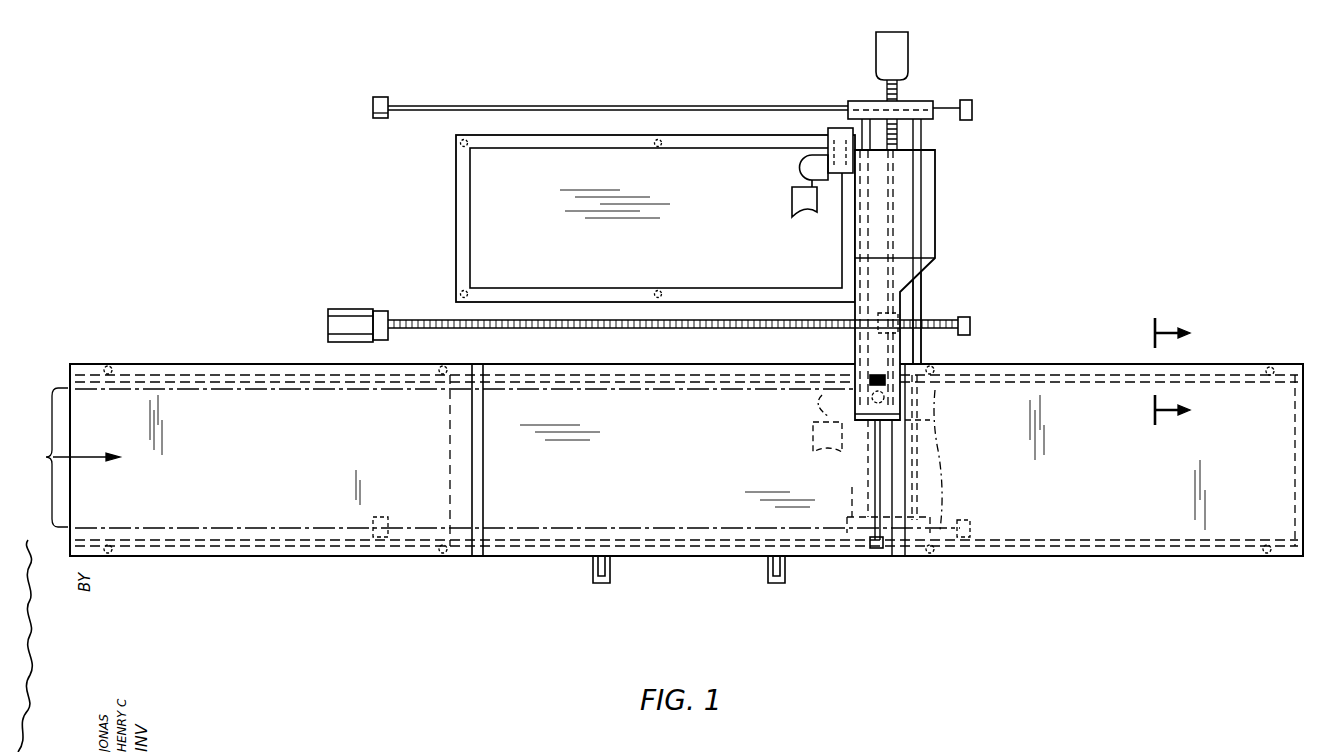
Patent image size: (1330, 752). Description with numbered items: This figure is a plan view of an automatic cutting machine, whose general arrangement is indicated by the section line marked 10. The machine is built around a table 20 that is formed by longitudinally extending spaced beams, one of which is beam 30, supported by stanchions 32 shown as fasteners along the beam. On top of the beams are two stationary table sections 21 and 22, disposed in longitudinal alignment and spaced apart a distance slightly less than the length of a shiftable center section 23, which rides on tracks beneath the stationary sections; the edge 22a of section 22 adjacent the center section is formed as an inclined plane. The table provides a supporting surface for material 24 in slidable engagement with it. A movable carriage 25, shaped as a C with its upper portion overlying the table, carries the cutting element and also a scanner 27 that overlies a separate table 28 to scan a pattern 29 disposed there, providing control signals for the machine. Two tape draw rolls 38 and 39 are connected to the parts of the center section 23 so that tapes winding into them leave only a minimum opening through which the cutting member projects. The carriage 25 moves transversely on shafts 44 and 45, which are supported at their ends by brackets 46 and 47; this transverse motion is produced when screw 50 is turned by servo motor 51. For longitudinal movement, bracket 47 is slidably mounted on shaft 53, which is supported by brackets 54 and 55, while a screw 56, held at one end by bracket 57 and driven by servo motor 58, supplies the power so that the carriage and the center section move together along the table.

The section line 10- 10 is at (1153, 371).
The table 20 is at (1062, 560).
The stationary table section 21 is at (288, 556).
The stationary table section 22 is at (1135, 557).
The edge 22a is at (900, 557).
The shiftable table section 23 is at (450, 442).
The material 24 is at (935, 425).
The movable carriage 25 is at (936, 200).
The scanner 27 is at (828, 135).
The table 28 is at (460, 216).
The pattern 29 is at (790, 200).
The beam 30 is at (1303, 372).
The stanchions 32 is at (108, 366).
The tape draw roll 38 is at (869, 376).
The tape draw roll 39 is at (875, 549).
The shaft 44 is at (925, 145).
The shaft 45 is at (862, 126).
The bracket 46 is at (852, 490).
The bracket 47 is at (925, 104).
The screw 50 is at (898, 94).
The servo motor 51 is at (876, 42).
The shaft 53 is at (492, 106).
The bracket 54 is at (380, 540).
The bracket 55 is at (398, 80).
The screw 56 is at (420, 320).
The bracket 57 is at (983, 306).
The servo motor 58 is at (345, 316).